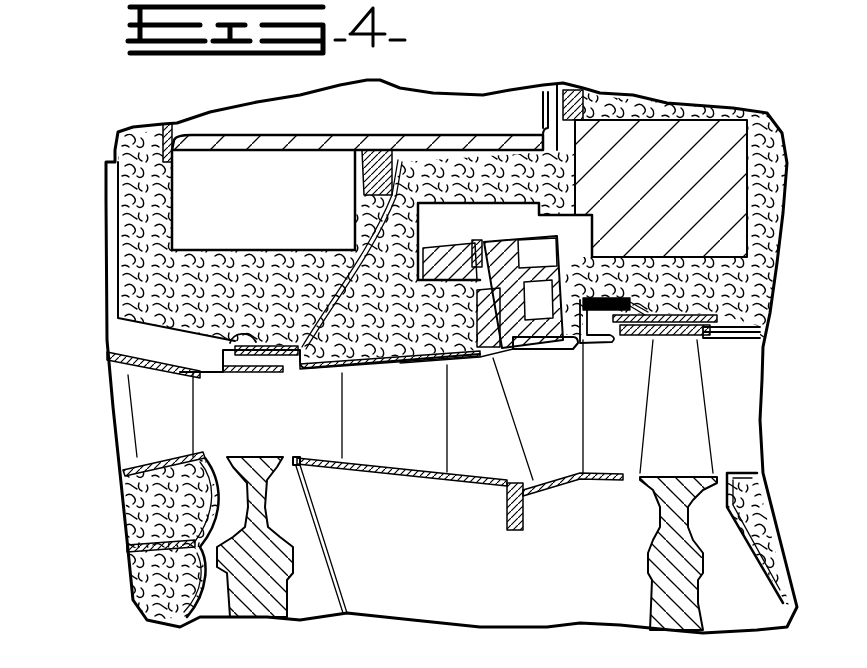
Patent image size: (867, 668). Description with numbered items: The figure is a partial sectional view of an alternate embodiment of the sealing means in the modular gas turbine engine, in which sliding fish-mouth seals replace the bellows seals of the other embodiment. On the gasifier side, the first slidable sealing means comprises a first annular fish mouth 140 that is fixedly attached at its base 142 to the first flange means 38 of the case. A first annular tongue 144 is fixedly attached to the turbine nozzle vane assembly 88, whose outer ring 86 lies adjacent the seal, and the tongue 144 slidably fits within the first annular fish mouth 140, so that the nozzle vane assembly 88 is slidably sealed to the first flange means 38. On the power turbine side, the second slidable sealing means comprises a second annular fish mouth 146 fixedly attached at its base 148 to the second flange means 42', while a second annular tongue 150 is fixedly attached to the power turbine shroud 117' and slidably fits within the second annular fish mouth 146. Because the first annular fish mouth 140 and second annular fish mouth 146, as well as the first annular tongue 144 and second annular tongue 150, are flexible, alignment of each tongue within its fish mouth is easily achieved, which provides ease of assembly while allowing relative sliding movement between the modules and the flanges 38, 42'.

The first flange means 38 is at (438, 256).
The second flange means 42' is at (555, 261).
The outer ring 86 is at (278, 373).
The turbine nozzle vane assembly 88 is at (118, 420).
The power turbine shroud 117' is at (736, 352).
The first annular fish mouth 140 is at (213, 338).
The base 142 is at (288, 360).
The first annular tongue 144 is at (233, 367).
The second annular fish mouth 146 is at (604, 296).
The base 148 is at (586, 340).
The second annular tongue 150 is at (640, 312).